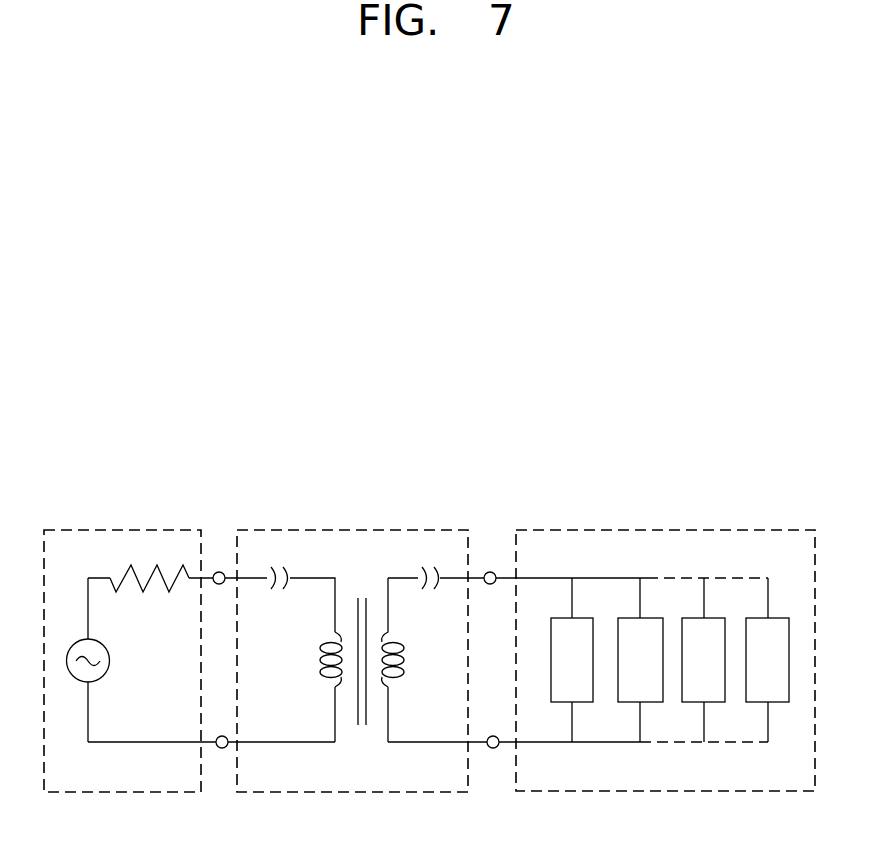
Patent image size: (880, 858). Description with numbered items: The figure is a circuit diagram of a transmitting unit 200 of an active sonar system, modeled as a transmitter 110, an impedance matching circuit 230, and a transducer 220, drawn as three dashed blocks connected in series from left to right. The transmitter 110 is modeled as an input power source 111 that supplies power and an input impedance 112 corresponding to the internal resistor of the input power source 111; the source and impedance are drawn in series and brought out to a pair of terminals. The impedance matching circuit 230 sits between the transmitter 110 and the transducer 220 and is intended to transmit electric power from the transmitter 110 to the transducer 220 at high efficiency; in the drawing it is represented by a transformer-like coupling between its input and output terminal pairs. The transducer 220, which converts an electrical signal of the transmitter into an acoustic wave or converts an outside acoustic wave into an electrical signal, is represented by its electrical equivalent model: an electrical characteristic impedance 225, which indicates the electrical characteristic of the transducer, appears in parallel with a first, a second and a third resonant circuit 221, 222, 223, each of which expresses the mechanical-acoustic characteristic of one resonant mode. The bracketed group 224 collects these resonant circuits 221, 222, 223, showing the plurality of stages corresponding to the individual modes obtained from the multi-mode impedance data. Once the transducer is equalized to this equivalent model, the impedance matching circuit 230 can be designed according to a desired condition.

The transmitter 110 is at (135, 530).
The input power source 111 is at (110, 674).
The input impedance 112 is at (149, 601).
The transmitting unit 200 is at (400, 518).
The impedance matching circuit 230 is at (323, 530).
The transducer 220 is at (603, 529).
The electrical characteristic impedance 225 is at (562, 612).
The first resonant circuit 221 is at (629, 612).
The second resonant circuit 222 is at (693, 612).
The third resonant circuit 223 is at (759, 612).
The impedance group Z1 to ZN 224 is at (701, 666).